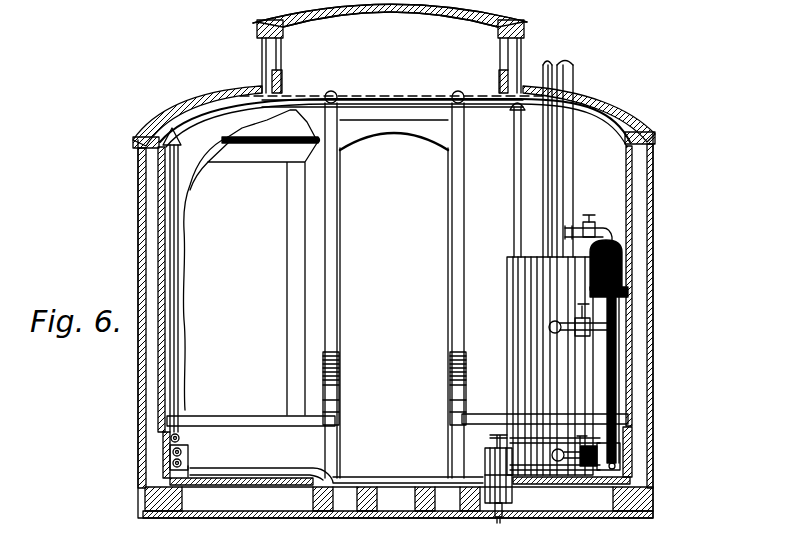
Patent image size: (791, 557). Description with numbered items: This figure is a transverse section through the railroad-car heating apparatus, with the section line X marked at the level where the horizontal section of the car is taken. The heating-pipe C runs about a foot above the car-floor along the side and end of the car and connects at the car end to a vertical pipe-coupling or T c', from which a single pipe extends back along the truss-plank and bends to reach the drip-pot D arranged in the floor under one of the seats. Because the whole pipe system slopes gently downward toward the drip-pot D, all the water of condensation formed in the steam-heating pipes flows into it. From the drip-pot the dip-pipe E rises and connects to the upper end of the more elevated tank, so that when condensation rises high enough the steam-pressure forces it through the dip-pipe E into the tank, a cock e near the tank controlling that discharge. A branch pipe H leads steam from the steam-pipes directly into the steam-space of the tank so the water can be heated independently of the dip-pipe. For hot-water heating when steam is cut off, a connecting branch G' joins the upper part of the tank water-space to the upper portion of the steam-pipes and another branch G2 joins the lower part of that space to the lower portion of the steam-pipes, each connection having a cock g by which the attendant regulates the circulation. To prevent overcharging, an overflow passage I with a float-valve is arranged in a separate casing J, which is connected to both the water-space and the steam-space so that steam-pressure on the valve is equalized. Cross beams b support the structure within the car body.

The section line X is at (697, 129).
The branch pipe H is at (181, 322).
The cross beam b is at (397, 412).
The pipe-coupling c' is at (393, 452).
The heating-pipe C is at (335, 464).
The drip-pot D is at (511, 479).
The overflow port or passage I is at (550, 366).
The valve box or casing J is at (625, 266).
The dip-pipe E is at (595, 228).
The cock e is at (589, 219).
The connecting branch G' is at (544, 327).
The cock g is at (580, 303).
The connecting branch G2 is at (600, 462).